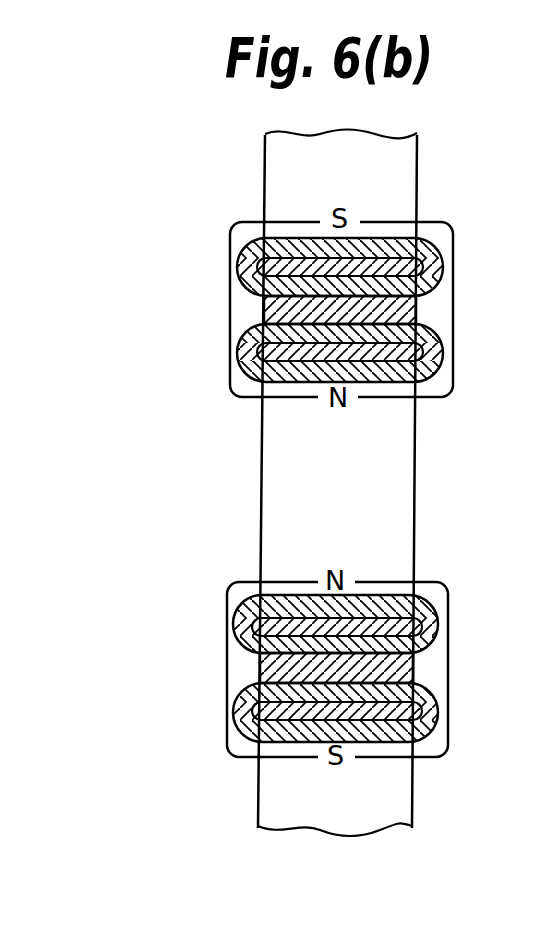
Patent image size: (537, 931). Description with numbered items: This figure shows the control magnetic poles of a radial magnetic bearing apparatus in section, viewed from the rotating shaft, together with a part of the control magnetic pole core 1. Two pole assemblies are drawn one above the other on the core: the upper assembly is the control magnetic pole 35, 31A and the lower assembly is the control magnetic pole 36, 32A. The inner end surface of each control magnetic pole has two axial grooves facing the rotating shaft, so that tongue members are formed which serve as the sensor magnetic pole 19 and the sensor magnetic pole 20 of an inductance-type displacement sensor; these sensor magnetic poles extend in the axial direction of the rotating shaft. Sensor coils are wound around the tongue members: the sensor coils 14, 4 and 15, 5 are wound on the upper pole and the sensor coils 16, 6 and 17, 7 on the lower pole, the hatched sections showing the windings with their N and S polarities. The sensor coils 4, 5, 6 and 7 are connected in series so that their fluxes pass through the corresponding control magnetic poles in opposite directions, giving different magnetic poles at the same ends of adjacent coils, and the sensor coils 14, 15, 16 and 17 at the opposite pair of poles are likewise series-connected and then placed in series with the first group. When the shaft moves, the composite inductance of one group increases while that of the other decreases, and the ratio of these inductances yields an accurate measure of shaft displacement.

The control magnetic pole core 1 is at (275, 802).
The sensor coil 4 is at (244, 262).
The sensor coil 14 is at (285, 253).
The control magnetic pole 35 is at (262, 322).
The control magnetic pole 31A is at (252, 311).
The sensor coil 5 is at (444, 350).
The sensor coil 15 is at (377, 329).
The sensor coil 6 is at (314, 624).
The sensor coil 16 is at (314, 624).
The sensor magnetic pole 19 is at (408, 628).
The control magnetic pole 36 is at (257, 703).
The control magnetic pole 32A is at (235, 673).
The sensor magnetic pole 20 is at (408, 686).
The sensor coil 7 is at (377, 716).
The sensor coil 17 is at (377, 716).